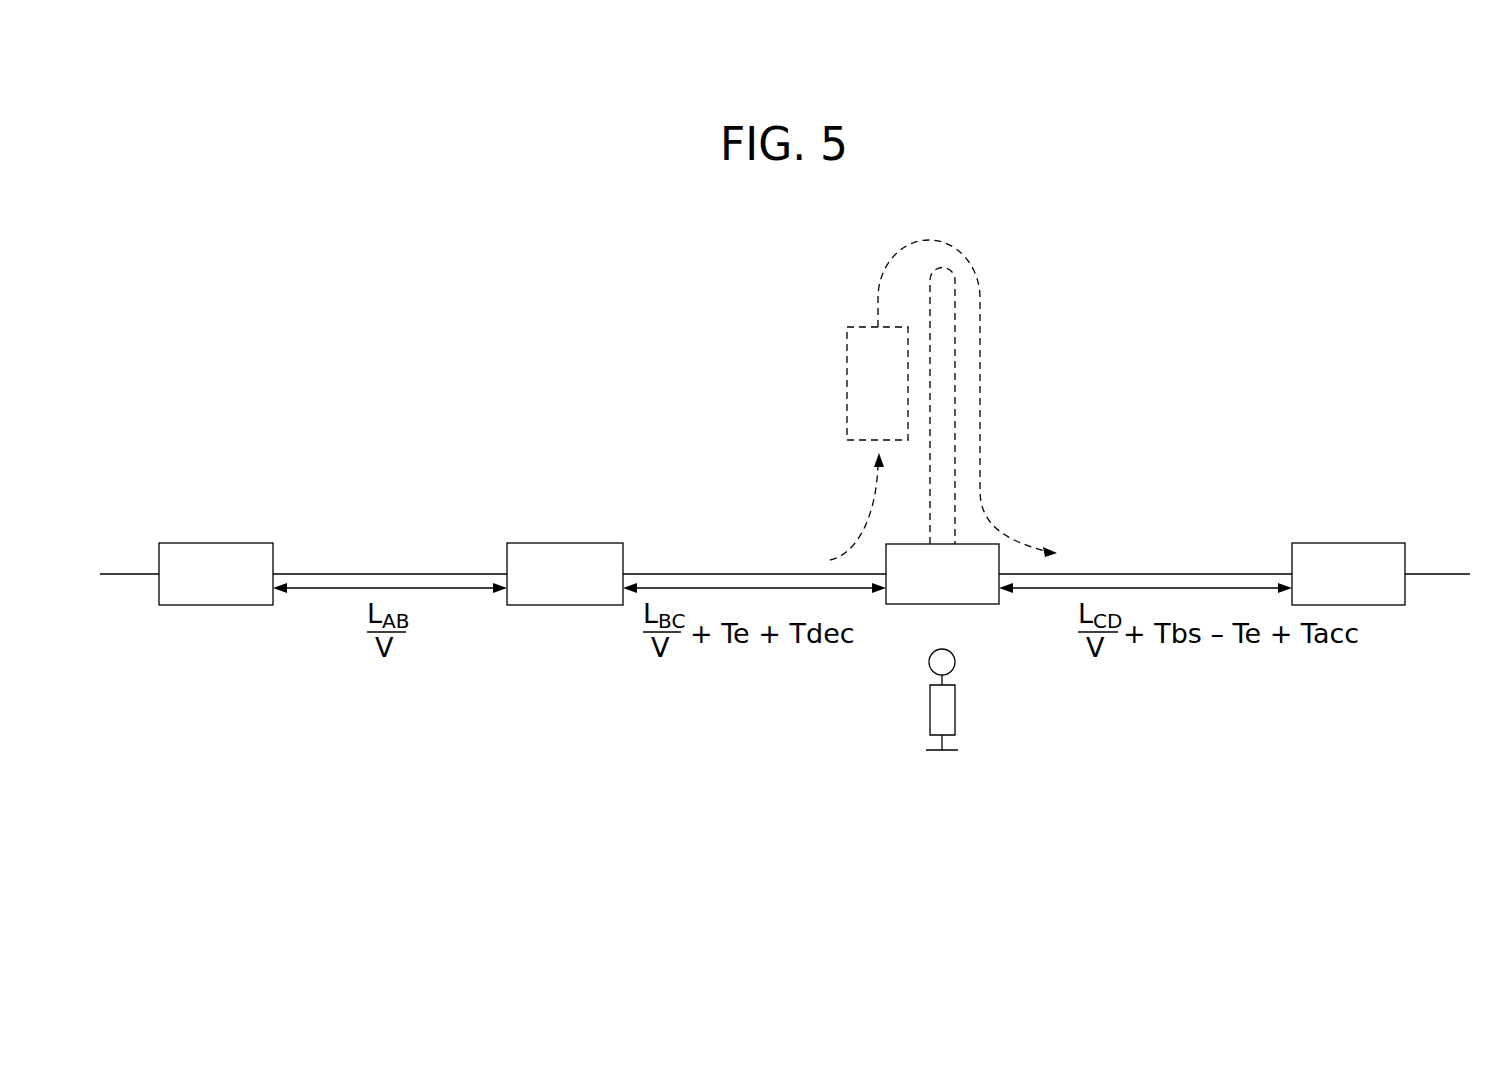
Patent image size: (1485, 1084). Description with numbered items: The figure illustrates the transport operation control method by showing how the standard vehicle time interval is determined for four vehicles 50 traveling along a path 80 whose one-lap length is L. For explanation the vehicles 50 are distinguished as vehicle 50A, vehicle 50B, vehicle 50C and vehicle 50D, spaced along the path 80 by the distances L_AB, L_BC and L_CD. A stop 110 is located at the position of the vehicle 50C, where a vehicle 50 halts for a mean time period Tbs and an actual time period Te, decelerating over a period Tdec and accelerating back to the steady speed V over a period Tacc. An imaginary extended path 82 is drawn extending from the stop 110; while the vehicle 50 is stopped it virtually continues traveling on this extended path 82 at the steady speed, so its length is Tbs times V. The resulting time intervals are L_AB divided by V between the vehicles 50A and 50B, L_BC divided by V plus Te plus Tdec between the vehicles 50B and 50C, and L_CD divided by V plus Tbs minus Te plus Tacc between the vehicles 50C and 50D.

The vehicle 50 is at (847, 385).
The vehicle 50A is at (213, 543).
The vehicle 50B is at (560, 543).
The vehicle 50C is at (967, 604).
The vehicle 50D is at (1345, 543).
The path 80 is at (392, 574).
The extended path 82 is at (975, 282).
The stop 110 is at (955, 708).